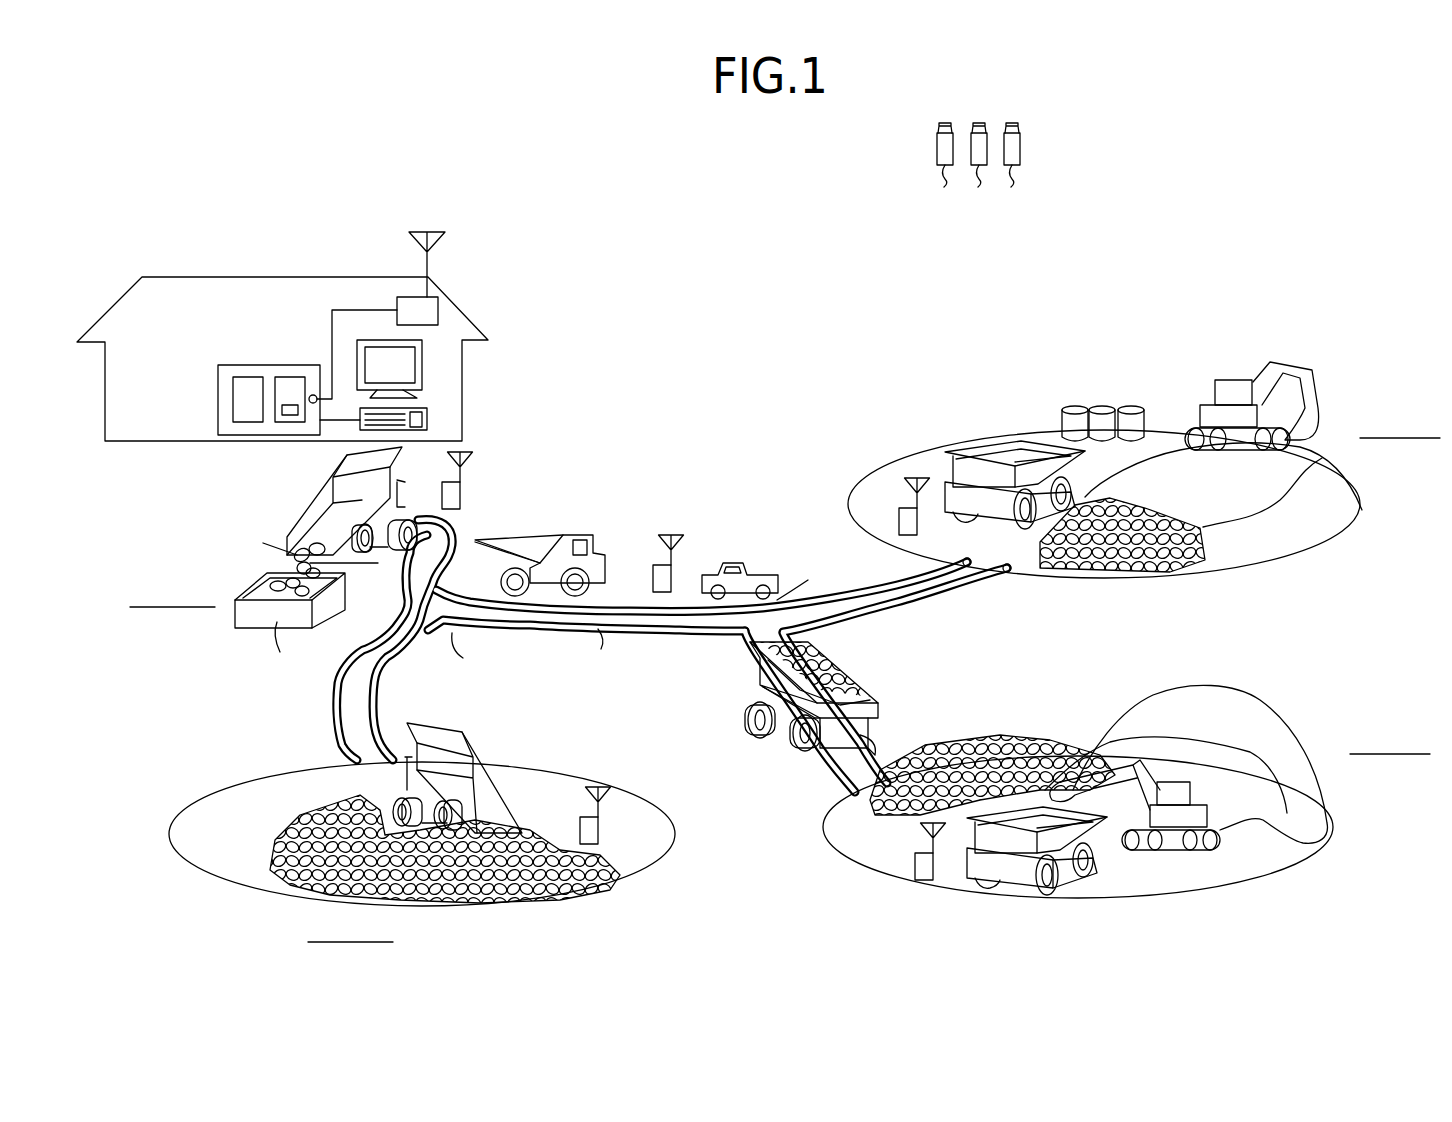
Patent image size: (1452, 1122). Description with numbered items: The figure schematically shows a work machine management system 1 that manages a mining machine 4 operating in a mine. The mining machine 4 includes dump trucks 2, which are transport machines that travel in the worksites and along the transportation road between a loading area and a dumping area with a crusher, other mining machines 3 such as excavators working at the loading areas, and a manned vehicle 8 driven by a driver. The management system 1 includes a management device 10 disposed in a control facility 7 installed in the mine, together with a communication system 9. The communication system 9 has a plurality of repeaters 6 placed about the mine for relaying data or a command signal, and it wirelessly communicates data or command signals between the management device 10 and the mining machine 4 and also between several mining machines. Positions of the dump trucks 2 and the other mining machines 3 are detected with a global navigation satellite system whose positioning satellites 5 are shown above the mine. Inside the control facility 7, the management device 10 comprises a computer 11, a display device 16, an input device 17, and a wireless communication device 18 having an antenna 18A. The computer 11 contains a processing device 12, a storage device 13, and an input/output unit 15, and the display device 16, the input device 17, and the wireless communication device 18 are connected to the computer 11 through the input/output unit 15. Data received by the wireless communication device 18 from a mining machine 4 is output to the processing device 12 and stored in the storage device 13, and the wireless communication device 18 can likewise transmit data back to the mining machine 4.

The work machine management system 1 is at (1140, 224).
The dump truck 2 is at (330, 480).
The other mining machine 3 is at (1232, 380).
The mining machine 4 is at (784, 628).
The positioning satellite 5 is at (978, 171).
The repeater 6 is at (464, 466).
The control facility 7 is at (333, 274).
The manned vehicle 8 is at (745, 563).
The communication system 9 is at (617, 272).
The management device 10 is at (294, 296).
The computer 11 is at (266, 359).
The processing device 12 is at (250, 377).
The storage device 13 is at (292, 377).
The input/output unit 15 is at (313, 394).
The display device 16 is at (424, 363).
The input device 17 is at (428, 419).
The wireless communication device 18 is at (405, 297).
The antenna 18A is at (426, 230).